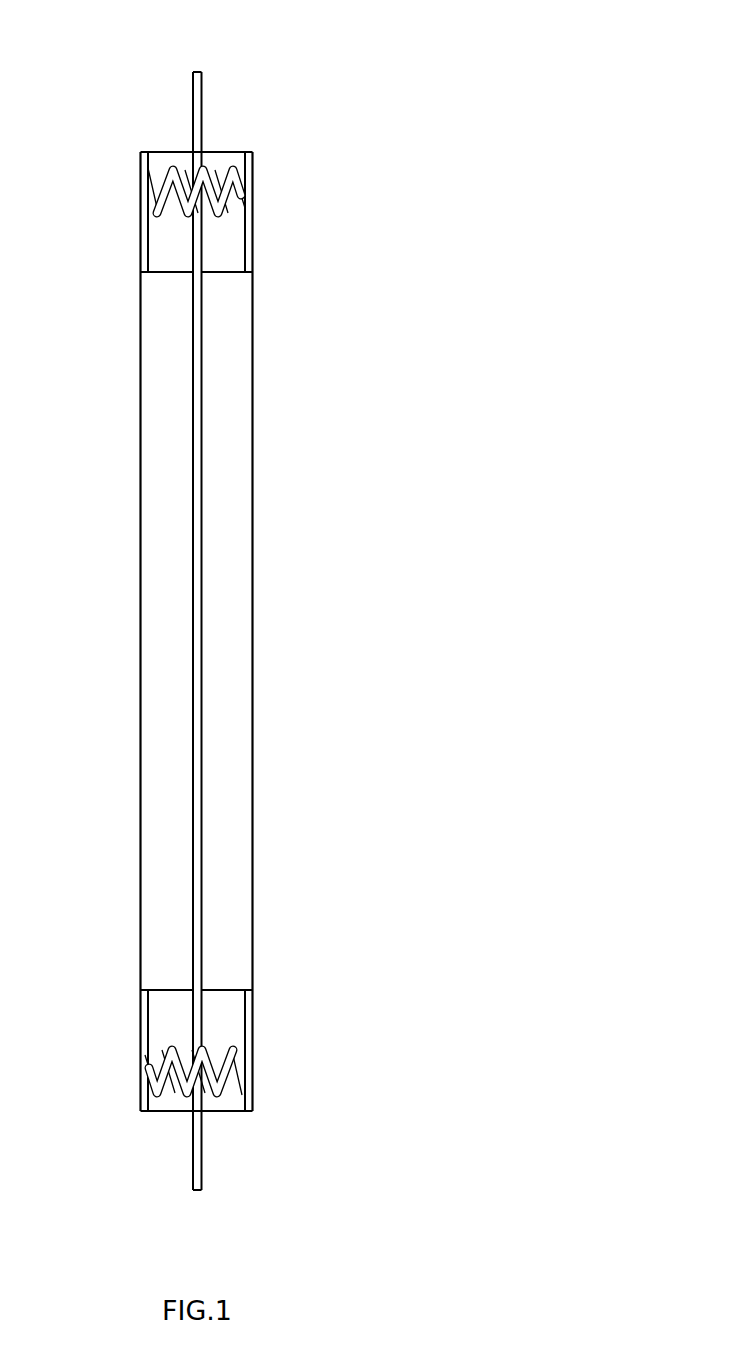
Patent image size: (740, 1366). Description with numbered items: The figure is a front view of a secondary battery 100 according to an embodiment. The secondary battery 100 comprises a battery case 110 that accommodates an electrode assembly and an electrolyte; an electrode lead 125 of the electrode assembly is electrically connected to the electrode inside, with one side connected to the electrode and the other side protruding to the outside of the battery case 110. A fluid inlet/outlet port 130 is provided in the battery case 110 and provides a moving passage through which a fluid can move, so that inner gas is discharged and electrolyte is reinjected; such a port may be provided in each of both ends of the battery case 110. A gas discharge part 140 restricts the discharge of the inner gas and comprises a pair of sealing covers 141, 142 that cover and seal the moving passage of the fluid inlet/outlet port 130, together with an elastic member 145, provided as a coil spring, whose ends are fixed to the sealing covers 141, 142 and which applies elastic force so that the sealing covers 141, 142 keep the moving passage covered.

The secondary battery 100 is at (412, 50).
The battery case 110 is at (253, 630).
The electrode lead 125 is at (194, 70).
The fluid inlet/outlet port 130 is at (162, 252).
The gas discharge part 140 is at (287, 597).
The sealing cover 141 is at (253, 180).
The sealing cover 142 is at (147, 240).
The elastic member 145 is at (203, 172).